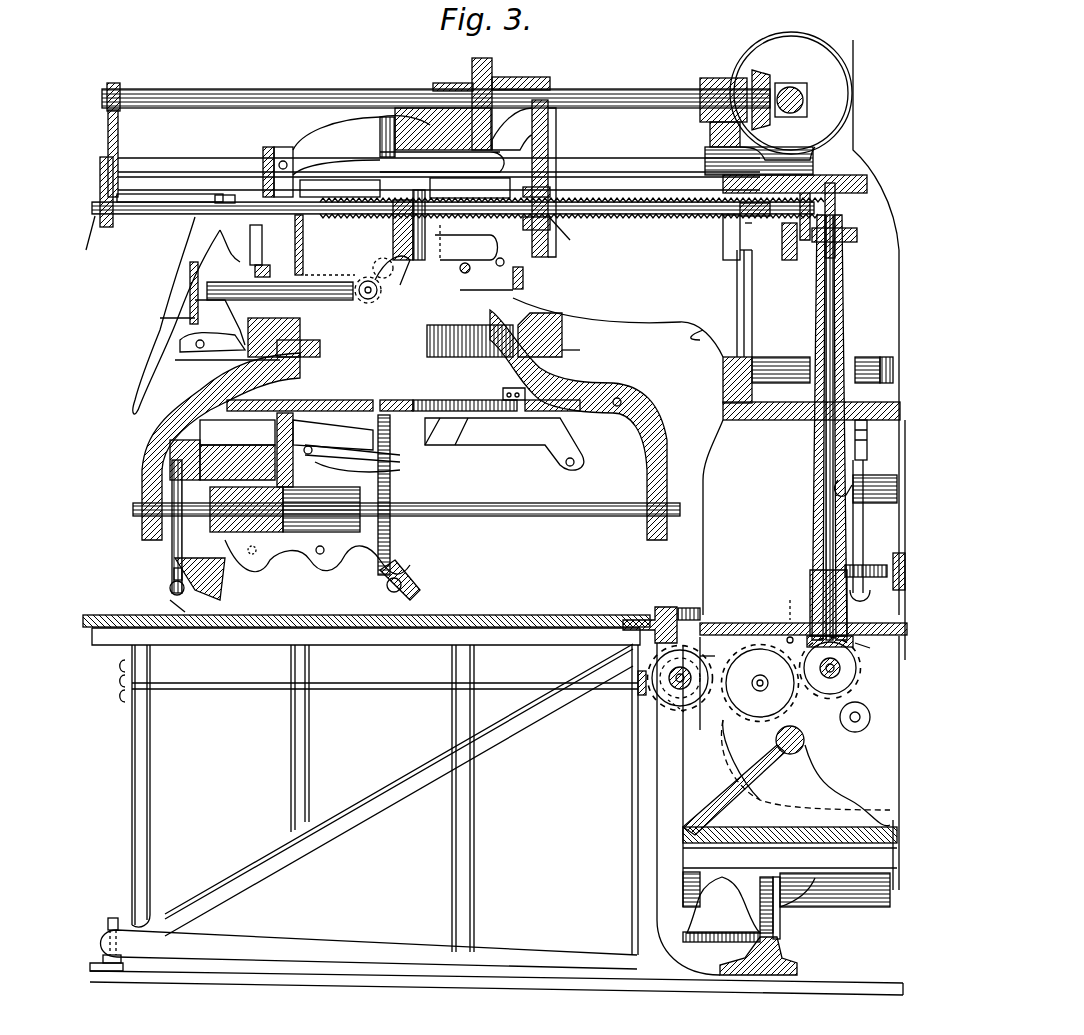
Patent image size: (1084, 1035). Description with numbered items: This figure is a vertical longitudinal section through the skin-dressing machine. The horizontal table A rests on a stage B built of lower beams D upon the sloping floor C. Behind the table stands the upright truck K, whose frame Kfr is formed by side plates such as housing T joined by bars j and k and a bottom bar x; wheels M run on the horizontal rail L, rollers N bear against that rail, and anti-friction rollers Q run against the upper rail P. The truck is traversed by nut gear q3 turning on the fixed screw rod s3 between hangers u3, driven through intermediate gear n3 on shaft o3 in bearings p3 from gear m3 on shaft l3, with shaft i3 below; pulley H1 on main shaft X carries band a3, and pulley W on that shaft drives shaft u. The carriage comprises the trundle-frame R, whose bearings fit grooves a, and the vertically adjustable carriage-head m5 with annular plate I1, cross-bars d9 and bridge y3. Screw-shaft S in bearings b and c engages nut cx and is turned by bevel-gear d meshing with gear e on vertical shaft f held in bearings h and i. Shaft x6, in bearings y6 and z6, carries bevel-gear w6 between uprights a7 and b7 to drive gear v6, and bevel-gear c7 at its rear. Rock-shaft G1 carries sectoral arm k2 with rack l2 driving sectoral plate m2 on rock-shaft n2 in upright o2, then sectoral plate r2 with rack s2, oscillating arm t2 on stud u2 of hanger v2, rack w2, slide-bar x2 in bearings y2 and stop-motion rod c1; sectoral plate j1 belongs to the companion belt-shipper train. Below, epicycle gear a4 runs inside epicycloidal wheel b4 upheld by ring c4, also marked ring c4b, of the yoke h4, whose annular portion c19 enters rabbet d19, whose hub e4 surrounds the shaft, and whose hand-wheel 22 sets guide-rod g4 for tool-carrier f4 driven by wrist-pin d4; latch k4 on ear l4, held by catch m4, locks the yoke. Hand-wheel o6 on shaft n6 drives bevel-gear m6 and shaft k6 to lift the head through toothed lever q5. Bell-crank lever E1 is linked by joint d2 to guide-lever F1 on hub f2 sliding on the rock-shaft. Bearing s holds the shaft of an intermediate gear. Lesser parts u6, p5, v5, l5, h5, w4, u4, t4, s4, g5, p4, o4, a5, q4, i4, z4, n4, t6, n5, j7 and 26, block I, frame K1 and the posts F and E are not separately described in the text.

The upper shaft x6 is at (436, 97).
The post y6 is at (121, 153).
The bracket s is at (99, 192).
The shaft a is at (439, 174).
The rack bar G1 is at (458, 197).
The bar b is at (88, 240).
The frame column K is at (315, 157).
The box m5 is at (340, 185).
The stem w6 is at (483, 96).
The plate a7 is at (453, 79).
The plate b7 is at (521, 74).
The hub u6 is at (392, 120).
The arm y3 is at (375, 125).
The standard R is at (529, 184).
The sleeve v6 is at (444, 156).
The bar c4 is at (470, 181).
The screw S is at (437, 220).
The pin cx is at (549, 253).
The plate p5 is at (466, 240).
The pin v5 is at (477, 259).
The bar d9 is at (486, 283).
The frame edge d19 is at (618, 325).
The block I1 is at (555, 330).
The block c19 is at (580, 350).
The shaft d4 is at (470, 341).
The frame h4 is at (403, 425).
The block I is at (284, 337).
The bar b4 is at (465, 396).
The bar a4 is at (397, 397).
The bar c4b is at (580, 408).
The plate l5 is at (505, 388).
The pin 22 is at (617, 402).
The arm h5 is at (504, 445).
The shaft g4 is at (406, 499).
The hub f4 is at (285, 502).
The post w4 is at (293, 455).
The bar e4 is at (300, 426).
The block u4 is at (212, 450).
The lever t4 is at (333, 439).
The link s4 is at (353, 449).
The spring g5 is at (364, 463).
The rod p4 is at (293, 504).
The cam o4 is at (317, 562).
The arm a5 is at (299, 569).
The roller q4 is at (170, 586).
The pin i4 is at (280, 599).
The block z4 is at (164, 567).
The post o6 is at (190, 285).
The shaft d2 is at (280, 282).
The gear n6 is at (350, 290).
The rod m6 is at (330, 267).
The block E1 is at (255, 264).
The lever k4 is at (229, 322).
The arm n4 is at (167, 317).
The lever l4 is at (212, 345).
The bar m4 is at (226, 370).
The lever F1 is at (185, 315).
The block f2 is at (225, 189).
The post t6 is at (259, 245).
The post k6 is at (324, 245).
The pawl q5 is at (392, 270).
The wheel n5 is at (383, 256).
The frame K1 is at (674, 295).
The wheel H1 is at (791, 93).
The gear c7 is at (766, 97).
The shaft X is at (803, 97).
The bearing 26 is at (718, 112).
The frame a3 is at (802, 327).
The block j7 is at (794, 242).
The post d is at (811, 216).
The rod f is at (830, 190).
The head e is at (855, 232).
The column c is at (725, 235).
The block z6 is at (727, 193).
The collar k2 is at (753, 233).
The collar l2 is at (752, 253).
The rod m2 is at (754, 303).
The vertical shaft h is at (836, 427).
The frame Kfr is at (700, 567).
The hub n2 is at (781, 362).
The block o2 is at (737, 380).
The hub r2 is at (875, 379).
The plate j1 is at (811, 402).
The rod s2 is at (865, 440).
The hub v2 is at (875, 479).
The arm u2 is at (845, 500).
The rod t2 is at (864, 526).
The block w2 is at (866, 579).
The block x2 is at (894, 584).
The loop y2 is at (862, 602).
The table frame T is at (831, 540).
The plate k is at (803, 608).
The pin c1 is at (790, 603).
The pin i is at (795, 621).
The table A is at (366, 620).
The pedestal P is at (650, 617).
The block Q is at (688, 605).
The gear n3 is at (760, 683).
The pin o3 is at (748, 683).
The gear p3 is at (675, 678).
The pin q3 is at (687, 712).
The shaft s3 is at (662, 696).
The bar u3 is at (709, 651).
The gear m3 is at (830, 668).
The pin l3 is at (868, 647).
The roller i3 is at (860, 717).
The shaft u is at (804, 735).
The lever W is at (786, 777).
The base plate x is at (790, 859).
The housing wall j is at (778, 805).
The bearing N is at (721, 909).
The stem M is at (775, 925).
The base L is at (758, 956).
The base rail C is at (496, 990).
The bar D is at (369, 949).
The frame B is at (379, 799).
The bolt F is at (111, 932).
The foot E is at (112, 975).